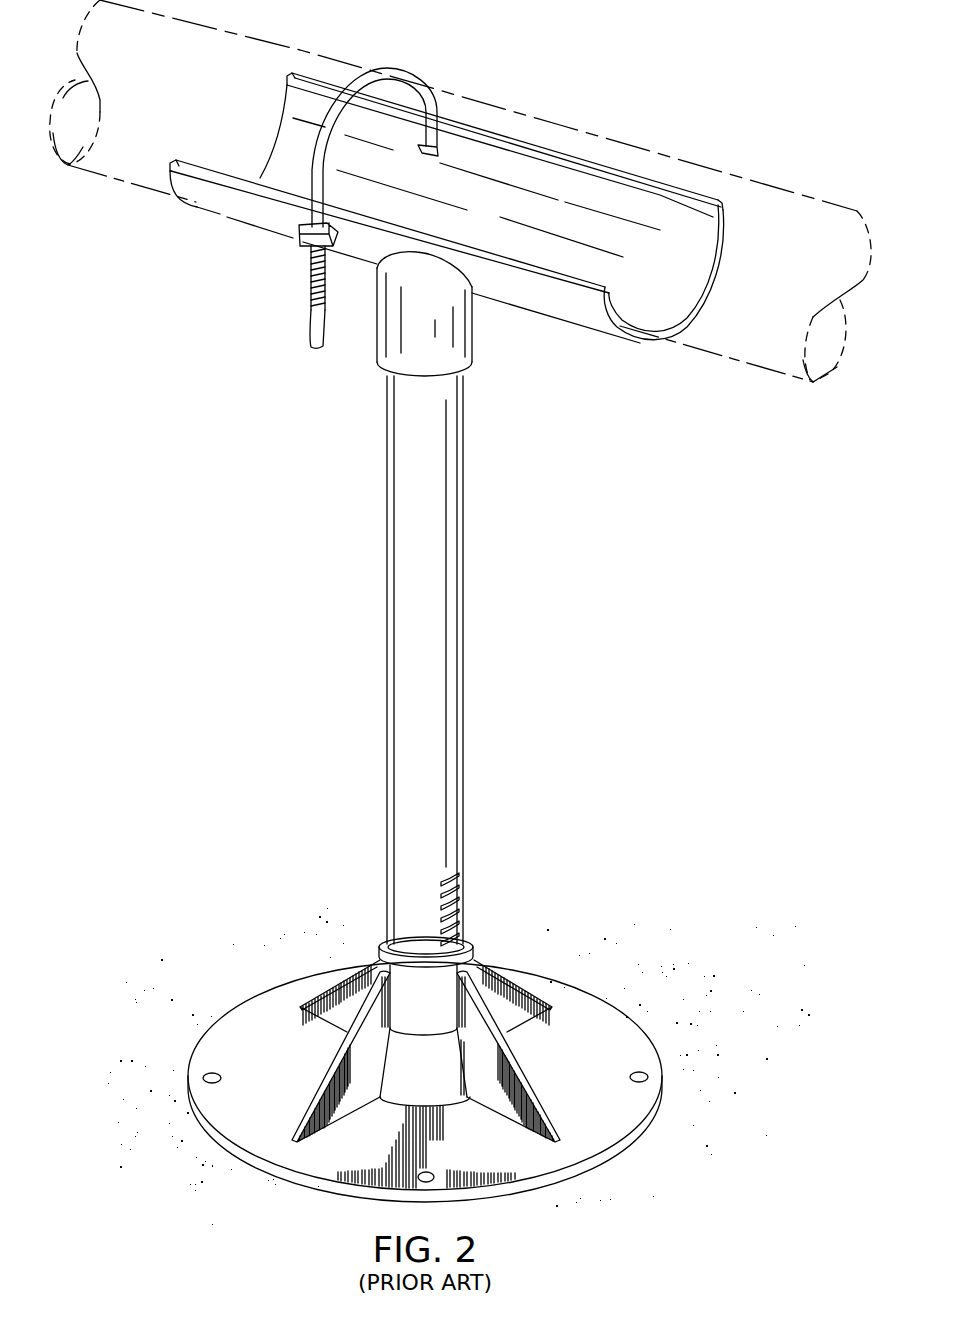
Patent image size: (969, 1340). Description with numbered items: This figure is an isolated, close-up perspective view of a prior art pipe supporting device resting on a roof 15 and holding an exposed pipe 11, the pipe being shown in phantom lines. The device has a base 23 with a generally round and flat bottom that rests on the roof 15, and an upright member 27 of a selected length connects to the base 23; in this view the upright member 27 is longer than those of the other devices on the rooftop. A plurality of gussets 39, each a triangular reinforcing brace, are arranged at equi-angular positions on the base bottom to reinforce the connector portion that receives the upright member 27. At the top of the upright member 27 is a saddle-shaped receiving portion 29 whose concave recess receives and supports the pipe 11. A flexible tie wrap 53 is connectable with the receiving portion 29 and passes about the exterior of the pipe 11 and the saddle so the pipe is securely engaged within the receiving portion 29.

The pipe 11 is at (582, 131).
The receiving portion 29 is at (556, 318).
The tie wrap 53 is at (394, 65).
The upright member 27 is at (387, 660).
The gussets 39 is at (502, 1078).
The base 23 is at (267, 1006).
The roof 15 is at (598, 965).